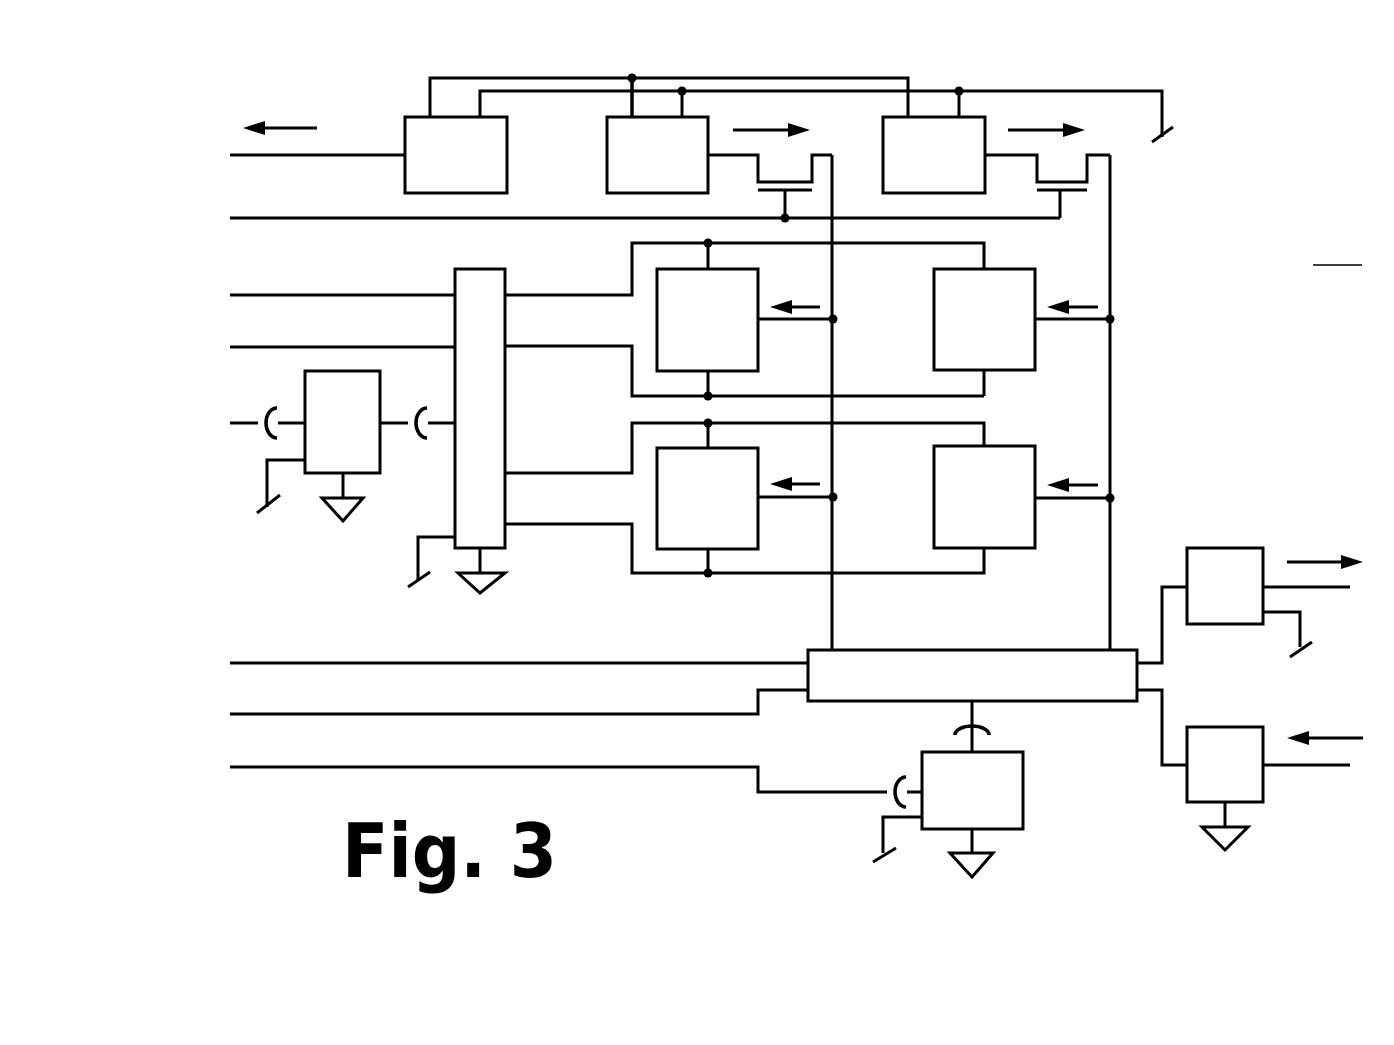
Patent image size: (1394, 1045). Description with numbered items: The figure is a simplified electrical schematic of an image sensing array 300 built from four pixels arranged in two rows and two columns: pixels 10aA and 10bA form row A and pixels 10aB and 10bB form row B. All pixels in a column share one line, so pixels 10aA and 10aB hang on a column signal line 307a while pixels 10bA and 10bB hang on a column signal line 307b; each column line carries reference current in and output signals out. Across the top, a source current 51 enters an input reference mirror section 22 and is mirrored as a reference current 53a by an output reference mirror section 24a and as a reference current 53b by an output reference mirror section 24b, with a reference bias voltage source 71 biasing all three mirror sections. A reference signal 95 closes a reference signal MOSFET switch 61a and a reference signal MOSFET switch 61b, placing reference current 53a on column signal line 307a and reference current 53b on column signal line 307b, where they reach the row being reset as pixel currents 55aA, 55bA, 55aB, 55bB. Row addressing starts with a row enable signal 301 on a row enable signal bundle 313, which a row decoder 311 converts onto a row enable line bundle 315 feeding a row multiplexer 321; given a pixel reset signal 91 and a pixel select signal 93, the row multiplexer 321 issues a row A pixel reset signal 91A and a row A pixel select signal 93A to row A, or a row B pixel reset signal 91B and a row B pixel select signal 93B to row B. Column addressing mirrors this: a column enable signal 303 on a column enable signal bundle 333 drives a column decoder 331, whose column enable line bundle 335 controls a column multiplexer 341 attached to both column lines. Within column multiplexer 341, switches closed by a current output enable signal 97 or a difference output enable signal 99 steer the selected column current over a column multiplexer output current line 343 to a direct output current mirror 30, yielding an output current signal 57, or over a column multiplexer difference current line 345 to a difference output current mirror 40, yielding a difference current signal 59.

The source current 51 is at (290, 118).
The input reference mirror section 22 is at (413, 115).
The output reference mirror section 24a is at (617, 117).
The reference current 53a is at (750, 127).
The reference signal MOSFET switch 61a is at (813, 168).
The output reference mirror section 24b is at (973, 117).
The reference current 53b is at (1033, 127).
The reference bias voltage source 71 is at (1175, 130).
The reference signal MOSFET switch 61b is at (1093, 167).
The reference signal 95 is at (160, 196).
The image sensing array 300 is at (1339, 250).
The pixel reset signal 91 is at (162, 277).
The row A pixel reset signal 91A is at (560, 260).
The pixel select signal 93 is at (167, 365).
The row A pixel select signal 93A is at (610, 328).
The pixel current 55aA is at (806, 302).
The pixel current 55bA is at (1078, 303).
The pixel 10aA is at (760, 356).
The pixel 10bA is at (1007, 373).
The column signal line 307b is at (1112, 363).
The row enable signal 301 is at (168, 440).
The row enable signal bundle 313 is at (242, 423).
The row decoder 311 is at (317, 477).
The row enable line bundle 315 is at (443, 423).
The row B pixel reset signal 91B is at (613, 488).
The pixel current 55aB is at (806, 481).
The pixel current 55bB is at (1078, 481).
The pixel 10aB is at (760, 535).
The pixel 10bB is at (1007, 551).
The row multiplexer 321 is at (455, 552).
The row B pixel select signal 93B is at (558, 563).
The column signal line 307a is at (832, 598).
The direct output current mirror 30 is at (1202, 547).
The output current signal 57 is at (1303, 560).
The column multiplexer output current line 343 is at (1163, 640).
The current output enable signal 97 is at (185, 647).
The difference output enable signal 99 is at (142, 717).
The column multiplexer difference current line 345 is at (1163, 715).
The difference current signal 59 is at (1340, 737).
The column multiplexer 341 is at (868, 703).
The column enable line bundle 335 is at (975, 708).
The column decoder 331 is at (1025, 800).
The column enable signal bundle 333 is at (840, 787).
The column enable signal 303 is at (165, 785).
The difference output current mirror 40 is at (1195, 805).